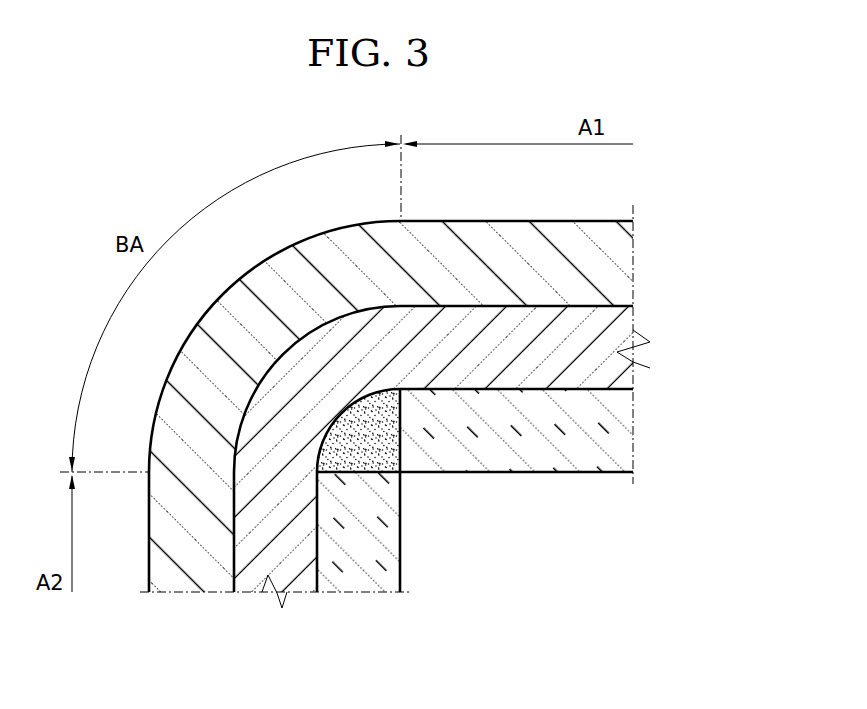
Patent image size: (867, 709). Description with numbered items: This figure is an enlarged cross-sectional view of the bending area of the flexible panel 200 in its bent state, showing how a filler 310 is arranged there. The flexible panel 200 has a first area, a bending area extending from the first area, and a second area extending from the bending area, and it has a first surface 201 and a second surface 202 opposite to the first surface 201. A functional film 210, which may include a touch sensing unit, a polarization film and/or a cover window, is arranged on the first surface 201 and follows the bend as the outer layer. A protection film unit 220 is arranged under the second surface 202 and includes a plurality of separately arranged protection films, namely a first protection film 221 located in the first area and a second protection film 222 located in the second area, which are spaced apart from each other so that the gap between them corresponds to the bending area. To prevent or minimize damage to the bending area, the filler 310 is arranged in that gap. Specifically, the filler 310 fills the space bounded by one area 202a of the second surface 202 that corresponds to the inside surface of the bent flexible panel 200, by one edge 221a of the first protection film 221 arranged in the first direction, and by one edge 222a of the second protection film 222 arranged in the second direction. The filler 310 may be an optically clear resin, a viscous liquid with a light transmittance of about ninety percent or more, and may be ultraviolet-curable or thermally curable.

The flexible panel 200 is at (618, 362).
The first surface 201 is at (556, 304).
The second surface 202 is at (536, 390).
The one area of the second surface 202a is at (337, 433).
The functional film 210 is at (617, 270).
The protection film unit 220 is at (648, 430).
The first protection film 221 is at (598, 458).
The one edge of the first protection film 221a is at (402, 410).
The second protection film 222 is at (385, 572).
The one edge of the second protection film 222a is at (348, 477).
The filler 310 is at (380, 468).